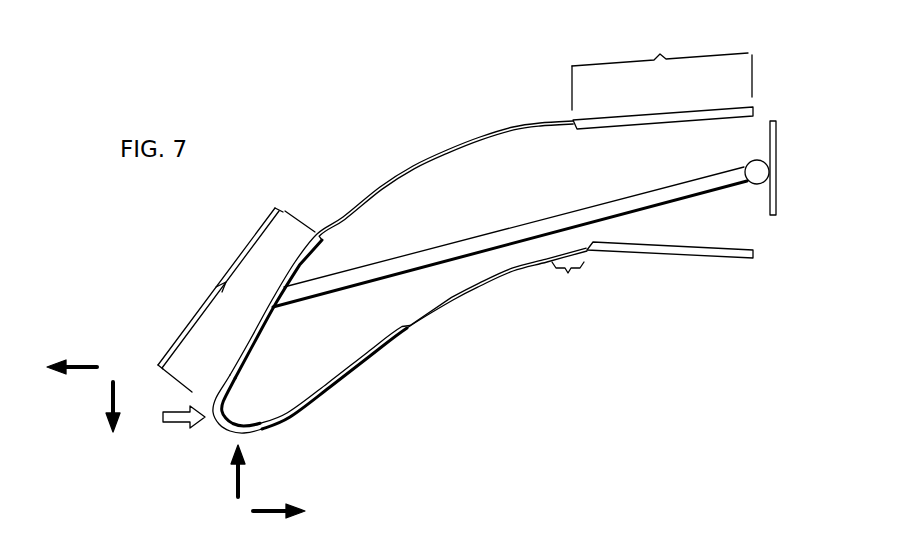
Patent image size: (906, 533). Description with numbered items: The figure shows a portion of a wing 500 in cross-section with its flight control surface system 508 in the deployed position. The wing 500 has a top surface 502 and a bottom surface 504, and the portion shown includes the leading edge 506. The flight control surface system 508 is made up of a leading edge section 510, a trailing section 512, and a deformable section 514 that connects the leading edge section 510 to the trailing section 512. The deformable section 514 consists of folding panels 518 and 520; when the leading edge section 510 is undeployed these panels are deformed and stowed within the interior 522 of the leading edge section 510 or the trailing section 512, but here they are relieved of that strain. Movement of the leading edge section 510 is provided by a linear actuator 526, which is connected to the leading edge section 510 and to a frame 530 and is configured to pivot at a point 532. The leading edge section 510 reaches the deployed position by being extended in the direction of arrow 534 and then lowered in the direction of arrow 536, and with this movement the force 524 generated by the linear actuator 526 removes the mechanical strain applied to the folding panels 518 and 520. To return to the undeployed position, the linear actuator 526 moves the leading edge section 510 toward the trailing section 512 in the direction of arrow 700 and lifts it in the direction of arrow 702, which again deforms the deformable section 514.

The wing 500 is at (770, 37).
The top surface 502 is at (680, 107).
The bottom surface 504 is at (350, 378).
The leading edge 506 is at (210, 404).
The flight control surface system 508 is at (805, 99).
The leading edge section 510 is at (216, 282).
The trailing section 512 is at (662, 66).
The deformable section 514 is at (651, 272).
The folding panel 518 is at (413, 167).
The folding panel 520 is at (470, 292).
The interior 522 is at (498, 201).
The force 524 is at (178, 428).
The linear actuator 526 is at (640, 193).
The frame 530 is at (777, 150).
The point 532 is at (757, 184).
The arrow 534 is at (82, 363).
The arrow 536 is at (110, 398).
The arrow 700 is at (268, 506).
The arrow 702 is at (232, 490).